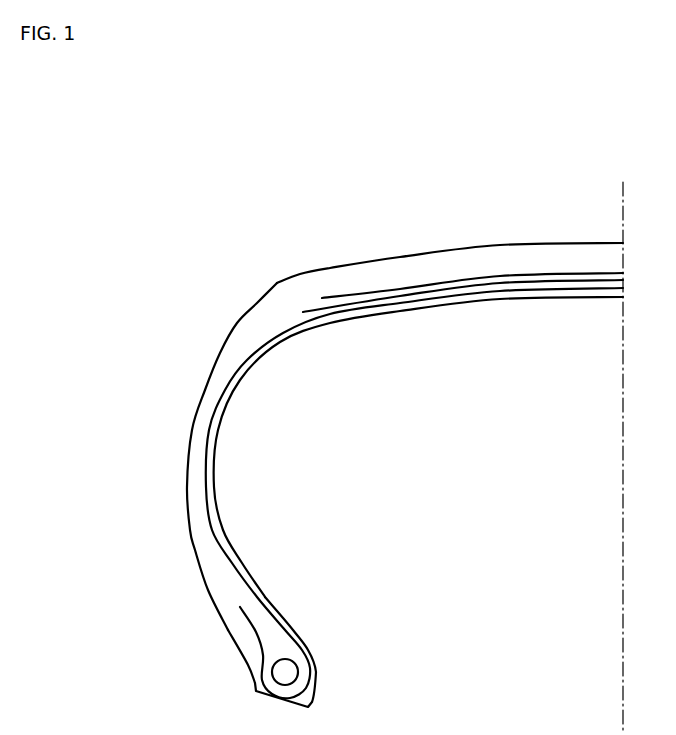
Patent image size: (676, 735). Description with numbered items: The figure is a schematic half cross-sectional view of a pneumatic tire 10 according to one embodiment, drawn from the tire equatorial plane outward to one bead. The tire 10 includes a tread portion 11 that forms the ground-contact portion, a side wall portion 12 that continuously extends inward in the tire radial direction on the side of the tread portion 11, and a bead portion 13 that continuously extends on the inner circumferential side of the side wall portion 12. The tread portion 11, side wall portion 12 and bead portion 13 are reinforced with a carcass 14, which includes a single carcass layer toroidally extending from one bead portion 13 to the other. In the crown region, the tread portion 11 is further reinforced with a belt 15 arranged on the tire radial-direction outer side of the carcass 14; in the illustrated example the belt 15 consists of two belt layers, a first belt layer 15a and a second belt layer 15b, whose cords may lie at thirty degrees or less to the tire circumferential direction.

The tire 10 is at (361, 413).
The tread portion 11 is at (499, 243).
The side wall portion 12 is at (190, 450).
The bead portion 13 is at (253, 677).
The carcass 14 is at (208, 508).
The belt 15 is at (463, 222).
The first belt layer 15a is at (423, 290).
The second belt layer 15b is at (371, 291).